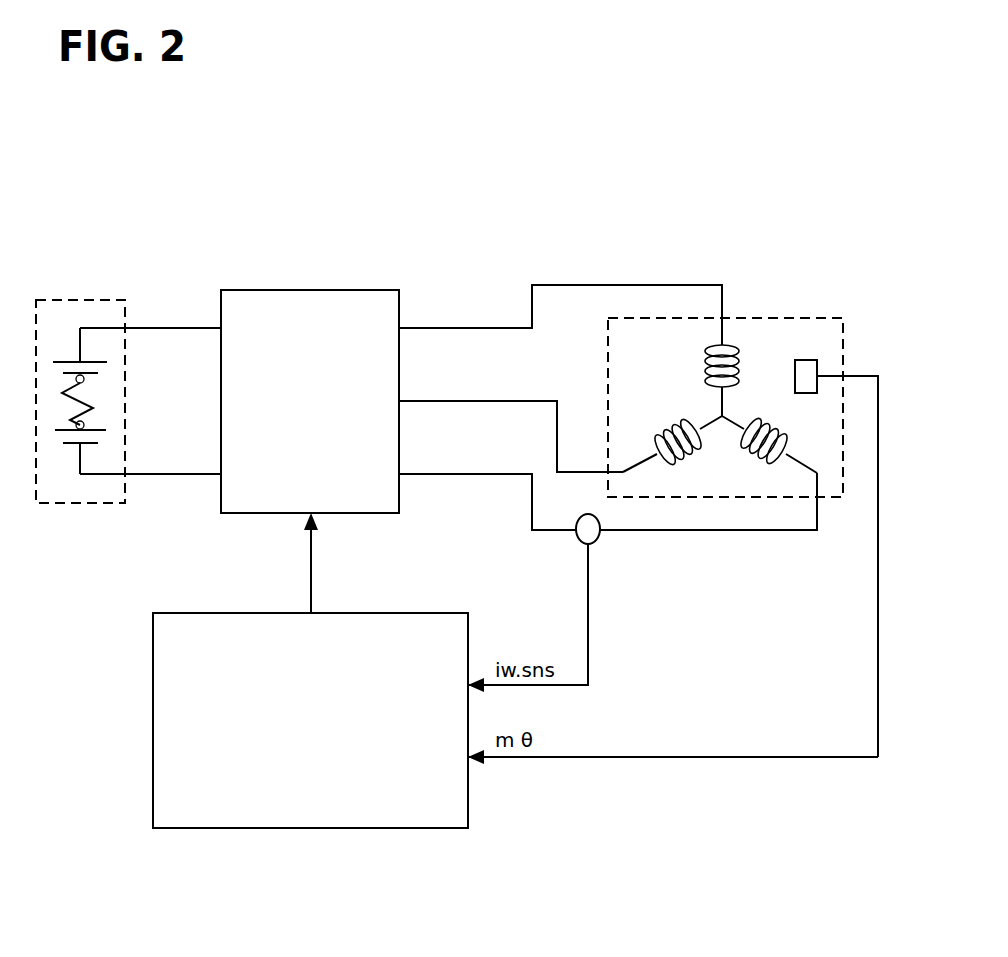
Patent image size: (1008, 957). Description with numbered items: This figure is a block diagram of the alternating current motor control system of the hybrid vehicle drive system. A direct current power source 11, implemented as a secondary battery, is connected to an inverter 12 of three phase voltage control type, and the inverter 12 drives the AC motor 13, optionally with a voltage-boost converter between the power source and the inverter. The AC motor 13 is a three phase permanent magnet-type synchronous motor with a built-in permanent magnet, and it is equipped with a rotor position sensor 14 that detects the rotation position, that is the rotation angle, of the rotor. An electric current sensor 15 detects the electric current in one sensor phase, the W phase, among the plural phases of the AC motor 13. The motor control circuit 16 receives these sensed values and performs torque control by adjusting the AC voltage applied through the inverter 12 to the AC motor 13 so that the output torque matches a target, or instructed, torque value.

The direct current power source 11 is at (75, 298).
The inverter 12 is at (311, 290).
The AC motor 13 is at (790, 318).
The rotor position sensor 14 is at (805, 360).
The electric current sensor 15 is at (597, 543).
The motor control circuit 16 is at (307, 828).